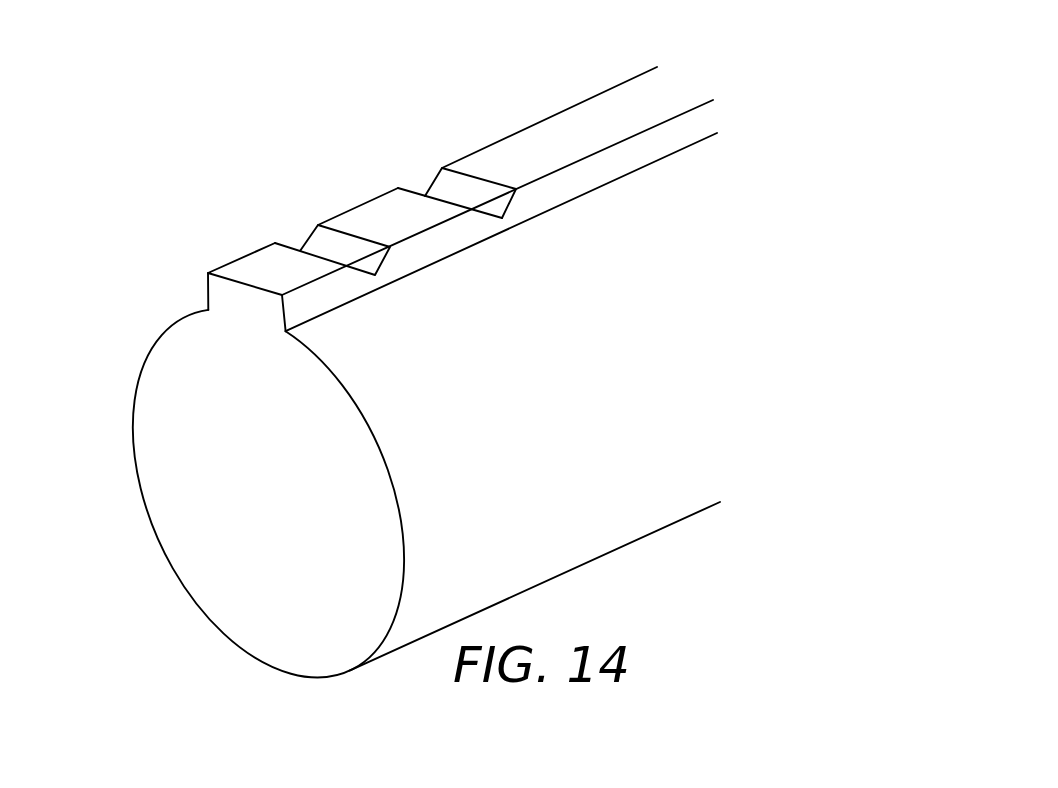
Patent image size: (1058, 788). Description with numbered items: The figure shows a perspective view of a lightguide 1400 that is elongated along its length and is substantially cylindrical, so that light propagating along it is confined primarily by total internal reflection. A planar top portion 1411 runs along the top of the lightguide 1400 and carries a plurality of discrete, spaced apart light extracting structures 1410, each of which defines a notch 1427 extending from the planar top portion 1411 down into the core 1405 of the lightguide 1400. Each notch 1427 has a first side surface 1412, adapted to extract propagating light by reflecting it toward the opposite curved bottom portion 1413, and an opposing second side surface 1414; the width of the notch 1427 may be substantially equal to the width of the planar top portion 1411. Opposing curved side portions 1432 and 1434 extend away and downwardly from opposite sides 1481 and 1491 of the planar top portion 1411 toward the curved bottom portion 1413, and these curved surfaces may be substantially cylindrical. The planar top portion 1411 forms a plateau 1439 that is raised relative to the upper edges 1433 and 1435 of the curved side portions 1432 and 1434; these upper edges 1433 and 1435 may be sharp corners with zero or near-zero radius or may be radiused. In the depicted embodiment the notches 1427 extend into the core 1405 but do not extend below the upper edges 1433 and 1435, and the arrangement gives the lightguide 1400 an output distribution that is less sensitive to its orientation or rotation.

The lightguide 1400 is at (136, 152).
The core 1405 is at (173, 472).
The light extracting structures 1410 is at (445, 188).
The planar top portion 1411 is at (248, 267).
The first side surface 1412 is at (290, 243).
The curved bottom portion 1413 is at (180, 575).
The second side surface 1414 is at (490, 197).
The notch 1427 is at (437, 170).
The curved side portion 1432 is at (150, 353).
The upper edge 1433 is at (207, 305).
The curved side portion 1434 is at (379, 447).
The upper edge 1435 is at (598, 187).
The plateau 1439 is at (620, 100).
The side of planar top portion 1481 is at (543, 120).
The side of planar top portion 1491 is at (660, 120).